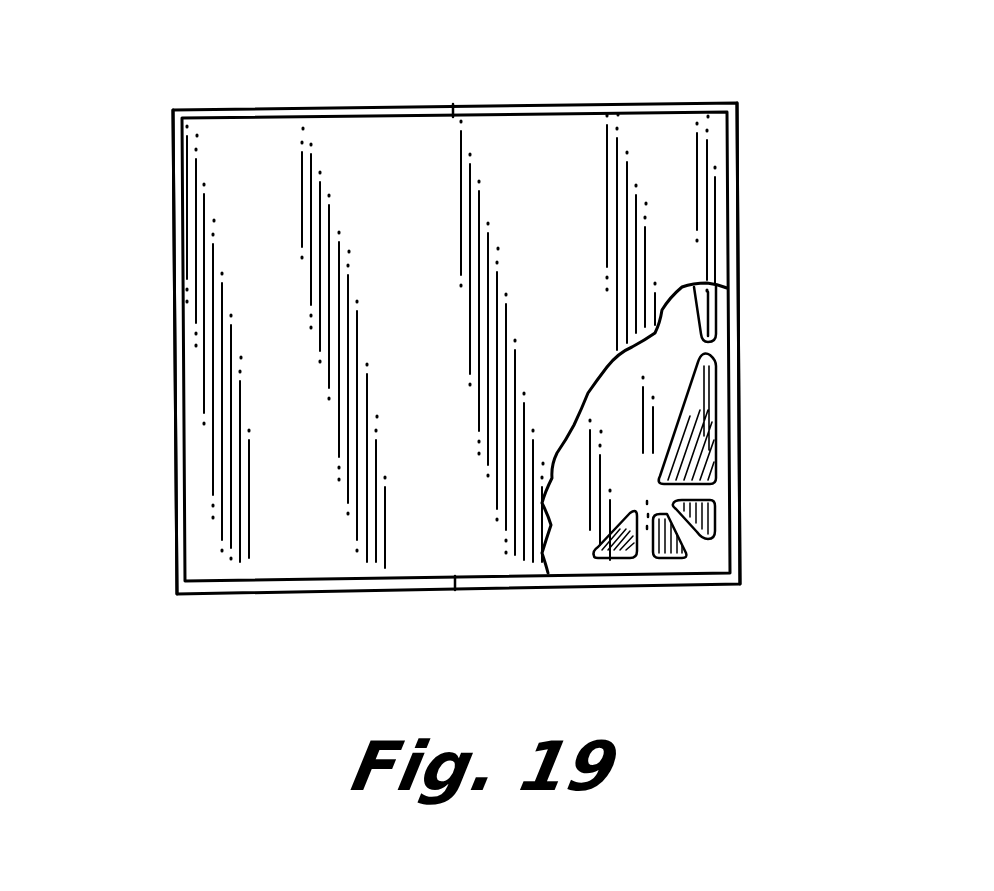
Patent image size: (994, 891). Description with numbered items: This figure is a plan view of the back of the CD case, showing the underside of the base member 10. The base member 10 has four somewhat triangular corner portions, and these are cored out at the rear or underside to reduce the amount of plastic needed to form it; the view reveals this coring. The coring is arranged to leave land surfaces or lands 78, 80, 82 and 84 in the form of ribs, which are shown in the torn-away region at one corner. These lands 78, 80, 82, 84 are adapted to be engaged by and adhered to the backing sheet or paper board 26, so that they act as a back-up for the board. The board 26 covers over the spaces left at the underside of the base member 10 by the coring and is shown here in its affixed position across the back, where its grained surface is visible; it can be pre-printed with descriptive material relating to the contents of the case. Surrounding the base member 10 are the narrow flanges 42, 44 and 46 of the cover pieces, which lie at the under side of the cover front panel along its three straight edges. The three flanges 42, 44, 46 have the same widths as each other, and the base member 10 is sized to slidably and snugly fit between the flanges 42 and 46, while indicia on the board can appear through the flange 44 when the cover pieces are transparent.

The base member 10 is at (668, 400).
The backing sheet or paper board 26 is at (334, 538).
The flange 42 is at (318, 108).
The flange 44 is at (176, 412).
The flange 46 is at (598, 105).
The land 78 is at (717, 333).
The land 80 is at (700, 500).
The land 82 is at (681, 497).
The land 84 is at (637, 518).